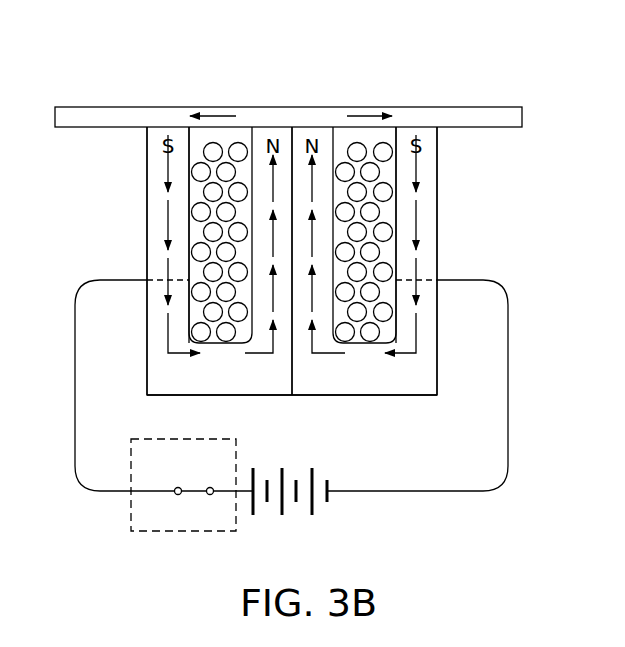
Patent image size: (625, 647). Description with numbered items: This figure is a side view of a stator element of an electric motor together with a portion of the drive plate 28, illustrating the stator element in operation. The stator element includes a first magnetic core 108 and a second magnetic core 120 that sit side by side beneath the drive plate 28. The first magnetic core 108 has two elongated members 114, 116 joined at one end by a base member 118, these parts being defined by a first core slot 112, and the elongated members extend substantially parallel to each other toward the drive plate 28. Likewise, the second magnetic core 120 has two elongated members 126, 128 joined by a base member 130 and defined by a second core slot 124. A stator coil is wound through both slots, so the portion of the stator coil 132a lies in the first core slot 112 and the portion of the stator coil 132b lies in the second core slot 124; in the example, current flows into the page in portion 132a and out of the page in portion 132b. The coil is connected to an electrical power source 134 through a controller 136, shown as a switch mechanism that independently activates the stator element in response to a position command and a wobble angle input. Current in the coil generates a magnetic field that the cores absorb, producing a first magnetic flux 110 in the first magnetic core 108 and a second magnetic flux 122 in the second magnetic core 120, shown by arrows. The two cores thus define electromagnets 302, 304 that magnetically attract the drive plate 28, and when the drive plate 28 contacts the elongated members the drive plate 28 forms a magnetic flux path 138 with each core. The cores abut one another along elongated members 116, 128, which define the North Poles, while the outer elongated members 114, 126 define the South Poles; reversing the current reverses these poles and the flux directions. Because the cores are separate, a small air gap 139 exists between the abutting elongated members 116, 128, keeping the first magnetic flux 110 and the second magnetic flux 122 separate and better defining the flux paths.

The drive plate 28 is at (522, 117).
The first magnetic core 108 is at (449, 228).
The first magnetic flux 110 is at (420, 176).
The first core slot 112 is at (385, 188).
The elongated member 114 is at (424, 118).
The elongated member 116 is at (330, 127).
The base member 118 is at (367, 395).
The second magnetic core 120 is at (136, 236).
The second magnetic flux 122 is at (167, 177).
The second core slot 124 is at (192, 212).
The elongated member 126 is at (152, 120).
The elongated member 128 is at (280, 127).
The base member 130 is at (216, 395).
The portion of the stator coil 132a is at (352, 145).
The portion of the stator coil 132b is at (219, 143).
The electrical power source 134 is at (331, 514).
The controller 136 is at (130, 530).
The magnetic flux path 138 is at (205, 116).
The air gap 139 is at (293, 395).
The electromagnet 302 is at (438, 249).
The electromagnet 304 is at (146, 252).